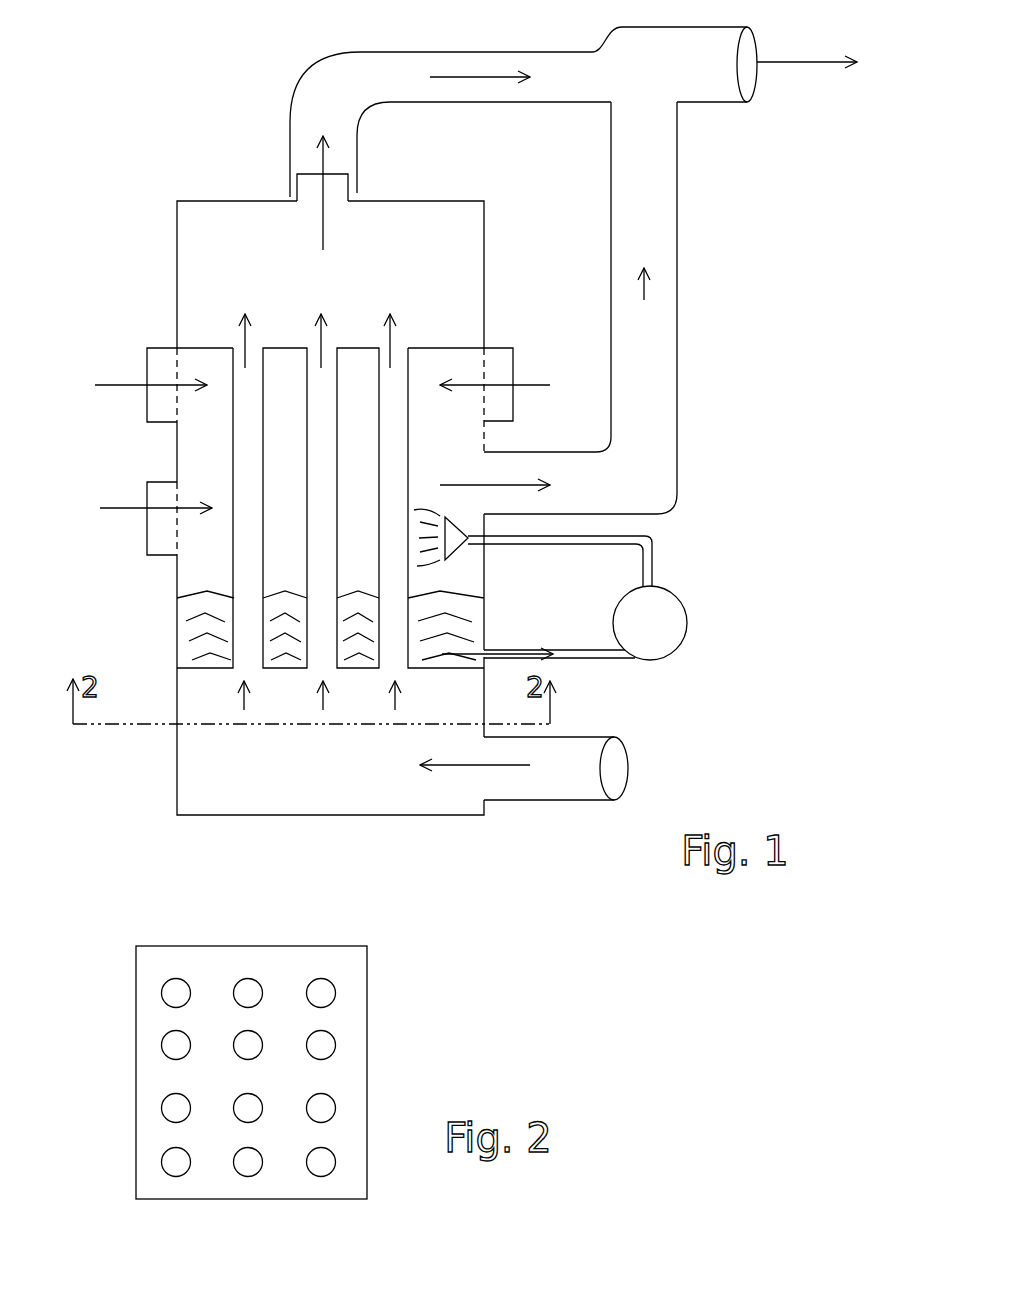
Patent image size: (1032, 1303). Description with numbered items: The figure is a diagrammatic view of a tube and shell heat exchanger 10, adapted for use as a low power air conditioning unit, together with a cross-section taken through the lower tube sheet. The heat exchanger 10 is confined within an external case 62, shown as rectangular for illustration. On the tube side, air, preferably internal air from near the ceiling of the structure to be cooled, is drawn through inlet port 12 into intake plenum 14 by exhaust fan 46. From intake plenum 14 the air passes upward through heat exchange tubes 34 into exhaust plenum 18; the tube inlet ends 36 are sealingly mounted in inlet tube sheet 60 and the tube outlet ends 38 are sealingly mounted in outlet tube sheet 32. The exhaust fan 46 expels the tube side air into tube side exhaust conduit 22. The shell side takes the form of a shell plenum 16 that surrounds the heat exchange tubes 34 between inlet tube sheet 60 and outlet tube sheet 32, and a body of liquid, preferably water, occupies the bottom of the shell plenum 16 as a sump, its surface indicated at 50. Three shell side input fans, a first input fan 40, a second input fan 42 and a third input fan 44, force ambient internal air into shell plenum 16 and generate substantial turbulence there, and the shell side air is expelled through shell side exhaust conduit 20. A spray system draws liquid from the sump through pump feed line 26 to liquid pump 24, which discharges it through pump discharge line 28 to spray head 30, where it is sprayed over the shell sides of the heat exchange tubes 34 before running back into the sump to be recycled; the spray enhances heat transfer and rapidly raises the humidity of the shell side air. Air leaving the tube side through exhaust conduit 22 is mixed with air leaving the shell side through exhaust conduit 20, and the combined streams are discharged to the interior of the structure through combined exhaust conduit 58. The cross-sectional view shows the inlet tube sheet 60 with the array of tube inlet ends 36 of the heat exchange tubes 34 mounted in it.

In FIG. 1, the tube and shell heat exchanger 10 is at (137, 173).
In FIG. 2, the tube and shell heat exchanger 10 is at (120, 910).
In FIG. 1, the inlet port 12 is at (615, 767).
In FIG. 1, the intake plenum 14 is at (283, 778).
In FIG. 1, the shell plenum 16 is at (220, 464).
In FIG. 1, the exhaust plenum 18 is at (199, 266).
In FIG. 1, the shell side exhaust conduit 20 is at (605, 503).
In FIG. 1, the tube side exhaust conduit 22 is at (356, 113).
In FIG. 1, the liquid pump 24 is at (658, 652).
In FIG. 1, the pump feed line 26 is at (583, 658).
In FIG. 1, the pump discharge line 28 is at (648, 553).
In FIG. 1, the spray head 30 is at (454, 550).
In FIG. 1, the outlet tube sheet 32 is at (210, 348).
In FIG. 1, the heat exchange tubes 34 is at (264, 388).
In FIG. 2, the heat exchange tubes 34 is at (262, 1105).
In FIG. 1, the tube inlet ends 36 is at (395, 665).
In FIG. 2, the tube inlet ends 36 is at (176, 993).
In FIG. 1, the tube outlet ends 38 is at (397, 350).
In FIG. 1, the first input fan 40 is at (147, 488).
In FIG. 1, the second input fan 42 is at (147, 410).
In FIG. 1, the third input fan 44 is at (508, 360).
In FIG. 1, the exhaust fan 46 is at (297, 188).
In FIG. 1, the surface of the body of liquid 50 is at (213, 592).
In FIG. 1, the combined exhaust conduit 58 is at (690, 84).
In FIG. 2, the inlet tube sheet 60 is at (357, 955).
In FIG. 1, the external case 62 is at (485, 258).